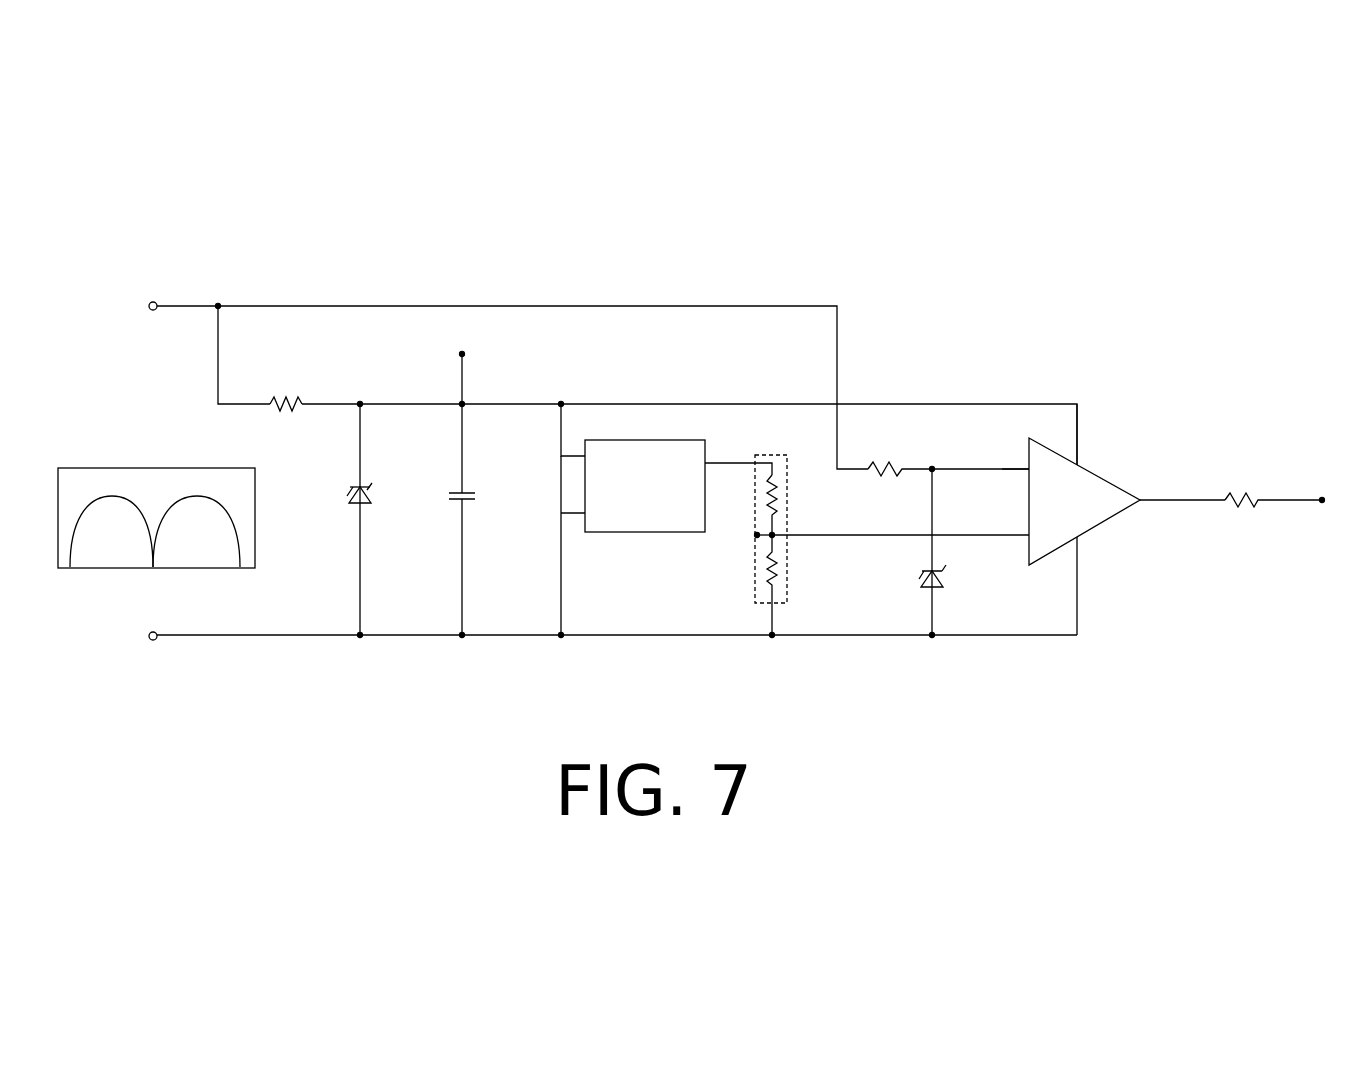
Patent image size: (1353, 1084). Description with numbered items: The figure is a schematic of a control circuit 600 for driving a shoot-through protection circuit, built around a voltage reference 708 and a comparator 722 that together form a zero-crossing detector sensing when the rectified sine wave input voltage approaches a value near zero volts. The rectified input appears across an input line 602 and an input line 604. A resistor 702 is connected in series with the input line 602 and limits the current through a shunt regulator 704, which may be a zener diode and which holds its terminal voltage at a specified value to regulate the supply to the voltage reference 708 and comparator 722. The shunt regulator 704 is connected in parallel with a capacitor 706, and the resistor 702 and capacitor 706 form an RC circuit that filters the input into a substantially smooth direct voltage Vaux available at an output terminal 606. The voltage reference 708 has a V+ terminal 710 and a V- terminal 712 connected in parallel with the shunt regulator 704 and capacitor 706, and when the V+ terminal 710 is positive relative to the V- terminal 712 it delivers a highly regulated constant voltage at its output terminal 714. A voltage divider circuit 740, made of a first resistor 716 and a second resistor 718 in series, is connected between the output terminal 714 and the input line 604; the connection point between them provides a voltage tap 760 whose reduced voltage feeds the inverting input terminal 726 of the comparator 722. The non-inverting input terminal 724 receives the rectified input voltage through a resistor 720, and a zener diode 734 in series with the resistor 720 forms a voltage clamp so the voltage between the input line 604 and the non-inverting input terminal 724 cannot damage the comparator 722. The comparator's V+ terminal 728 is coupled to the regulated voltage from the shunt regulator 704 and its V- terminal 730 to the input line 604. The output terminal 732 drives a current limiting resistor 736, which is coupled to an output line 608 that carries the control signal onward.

The control circuit 600 is at (155, 239).
The input line 602 is at (177, 306).
The input line 604 is at (227, 636).
The output terminal 606 is at (458, 376).
The output line 608 is at (1291, 500).
The resistor 702 is at (289, 411).
The shunt regulator 704 is at (347, 498).
The capacitor 706 is at (458, 499).
The voltage reference 708 is at (630, 454).
The V+ terminal 710 is at (562, 460).
The V- terminal 712 is at (566, 511).
The output terminal 714 is at (708, 463).
The first resistor 716 is at (779, 502).
The second resistor 718 is at (779, 575).
The resistor 720 is at (893, 470).
The comparator 722 is at (1104, 471).
The non-inverting input terminal 724 is at (1029, 470).
The inverting input terminal 726 is at (1029, 535).
The V+ terminal 728 is at (1078, 463).
The V- terminal 730 is at (1078, 538).
The output terminal 732 is at (1142, 500).
The zener diode 734 is at (941, 580).
The current limiting resistor 736 is at (1250, 500).
The voltage divider circuit 740 is at (756, 583).
The voltage tap 760 is at (755, 535).